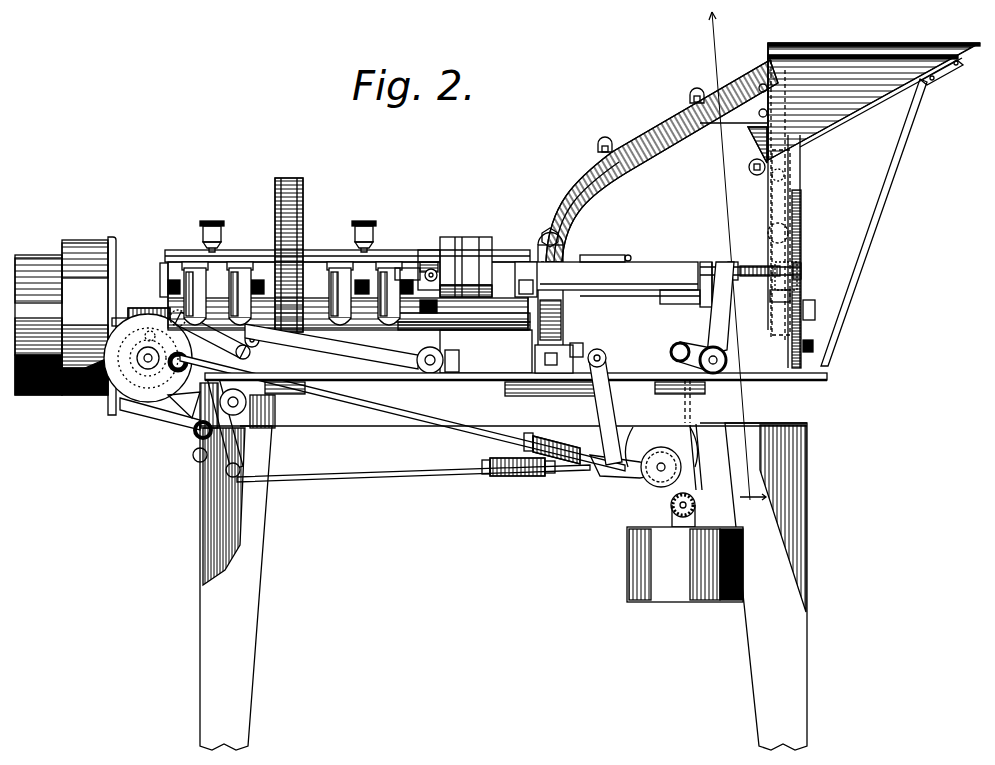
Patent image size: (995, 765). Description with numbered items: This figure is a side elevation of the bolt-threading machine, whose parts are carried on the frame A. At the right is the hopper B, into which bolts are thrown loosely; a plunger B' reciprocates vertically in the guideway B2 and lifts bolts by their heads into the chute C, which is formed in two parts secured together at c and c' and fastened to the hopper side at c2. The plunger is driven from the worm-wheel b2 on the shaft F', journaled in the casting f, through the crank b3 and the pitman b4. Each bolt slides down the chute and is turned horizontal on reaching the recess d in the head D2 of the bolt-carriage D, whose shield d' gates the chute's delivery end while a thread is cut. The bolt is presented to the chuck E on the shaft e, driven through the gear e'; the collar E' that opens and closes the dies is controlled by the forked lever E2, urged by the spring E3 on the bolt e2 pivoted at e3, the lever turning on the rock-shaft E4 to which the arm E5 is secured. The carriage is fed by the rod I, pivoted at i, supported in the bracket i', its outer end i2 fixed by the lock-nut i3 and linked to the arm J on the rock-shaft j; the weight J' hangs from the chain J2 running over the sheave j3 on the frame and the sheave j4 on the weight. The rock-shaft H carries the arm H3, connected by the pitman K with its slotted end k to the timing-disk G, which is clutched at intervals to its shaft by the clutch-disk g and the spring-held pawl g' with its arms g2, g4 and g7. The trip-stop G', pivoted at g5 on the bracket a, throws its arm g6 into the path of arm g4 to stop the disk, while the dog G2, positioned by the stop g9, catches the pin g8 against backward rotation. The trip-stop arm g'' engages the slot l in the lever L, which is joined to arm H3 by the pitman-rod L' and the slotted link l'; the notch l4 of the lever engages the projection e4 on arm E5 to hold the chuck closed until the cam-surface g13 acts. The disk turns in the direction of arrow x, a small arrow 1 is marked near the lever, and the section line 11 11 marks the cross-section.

The casting f is at (65, 326).
The arrow X x is at (88, 350).
The shaft F' is at (321, 304).
The timing-disk G is at (138, 386).
The clutch-disk g is at (117, 346).
The arm on pawl g7 is at (100, 378).
The pin g8 is at (150, 330).
The cam-surface g13 is at (81, 405).
The pawl arm g2 is at (184, 405).
The dog G2 is at (205, 320).
The stop g9 is at (206, 327).
The spring-held pawl g' is at (178, 395).
The second pawl arm g4 is at (133, 424).
The trip-stop arm g6 is at (162, 443).
The trip-stop G' is at (189, 433).
The pivot g5 is at (197, 461).
The trip-stop arm g'' is at (241, 424).
The bracket a is at (239, 398).
The projection e4 is at (262, 342).
The notch l4 is at (257, 328).
The spring E3 is at (318, 260).
The shaft e is at (157, 264).
The gear e' is at (299, 255).
The chuck E is at (466, 252).
The collar E' is at (421, 247).
The bolt e2 is at (419, 291).
The pivot e3 is at (445, 327).
The forked lever E2 is at (440, 340).
The arm E5 is at (344, 348).
The rock-shaft E4 is at (445, 372).
The pitman-rod K is at (403, 414).
The slotted end k is at (603, 490).
The pitman-rod L' is at (413, 483).
The slotted link l' is at (519, 497).
The slot l is at (262, 468).
The lever L is at (272, 451).
The frame A is at (348, 418).
The section arrow 1 is at (384, 469).
The section line 11 is at (732, 262).
The securing point c' is at (619, 221).
The chute C is at (633, 140).
The securing point c is at (602, 137).
The securing point c2 is at (733, 129).
The hopper B is at (874, 205).
The guideway B2 is at (785, 177).
The plunger B' is at (803, 242).
The pitman b4 is at (795, 212).
The crank b3 is at (797, 242).
The worm-wheel b2 is at (802, 275).
The rear end of rod i2 is at (786, 276).
The rod I is at (702, 262).
The pivot i is at (750, 244).
The bracket i' is at (721, 273).
The lock-nut i3 is at (767, 263).
The bolt-carriage D is at (610, 278).
The head of carriage D2 is at (585, 287).
The shield d' is at (680, 269).
The recess d is at (515, 259).
The rock-shaft H is at (607, 355).
The arm H3 is at (597, 417).
The sheave j3 is at (646, 474).
The sheave j4 is at (668, 503).
The chain J2 is at (698, 470).
The weight J' is at (685, 564).
The arm J is at (720, 308).
The rock-shaft j is at (712, 386).